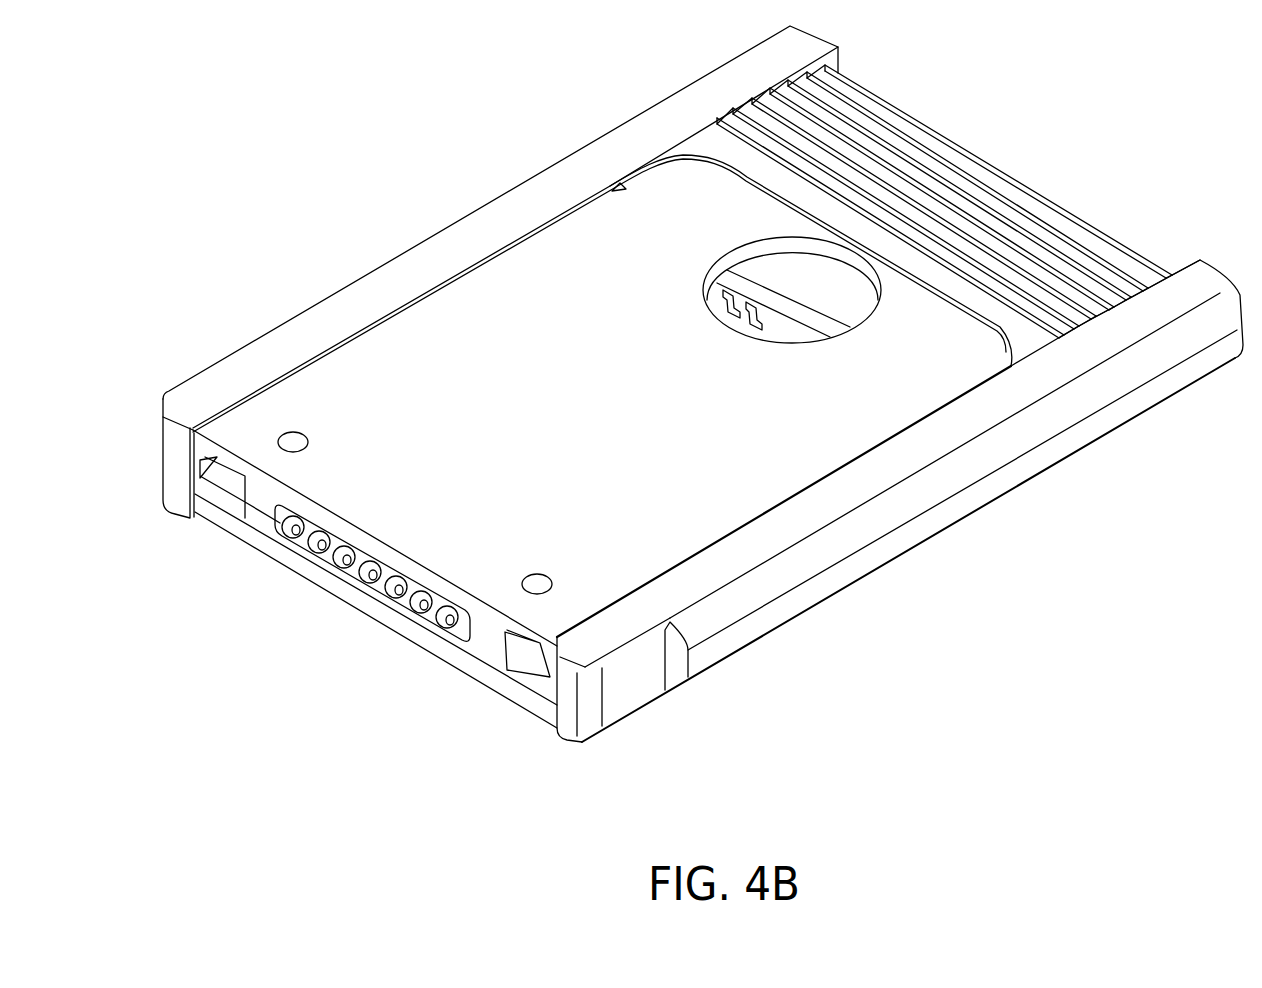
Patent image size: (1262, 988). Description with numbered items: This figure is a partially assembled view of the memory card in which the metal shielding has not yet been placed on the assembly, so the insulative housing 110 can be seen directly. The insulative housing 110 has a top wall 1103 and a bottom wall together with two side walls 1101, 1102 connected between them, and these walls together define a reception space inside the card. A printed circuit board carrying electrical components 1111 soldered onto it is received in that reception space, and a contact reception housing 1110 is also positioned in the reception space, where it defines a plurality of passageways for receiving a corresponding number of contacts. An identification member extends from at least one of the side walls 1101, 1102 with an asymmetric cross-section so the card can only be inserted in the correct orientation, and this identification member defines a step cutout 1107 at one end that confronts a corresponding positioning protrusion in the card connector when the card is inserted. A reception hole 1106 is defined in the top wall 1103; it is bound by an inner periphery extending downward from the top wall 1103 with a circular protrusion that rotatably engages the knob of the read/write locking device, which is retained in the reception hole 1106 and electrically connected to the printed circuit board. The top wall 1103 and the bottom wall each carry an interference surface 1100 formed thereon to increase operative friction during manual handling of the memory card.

The insulative housing 110 is at (811, 528).
The interference surface 1100 is at (977, 160).
The side wall 1101 is at (1048, 382).
The side wall 1102 is at (430, 260).
The top wall 1103 is at (838, 440).
The reception hole 1106 is at (850, 310).
The step cutout 1107 is at (627, 695).
The contact reception housing 1110 is at (485, 643).
The electrical components 1111 is at (787, 273).